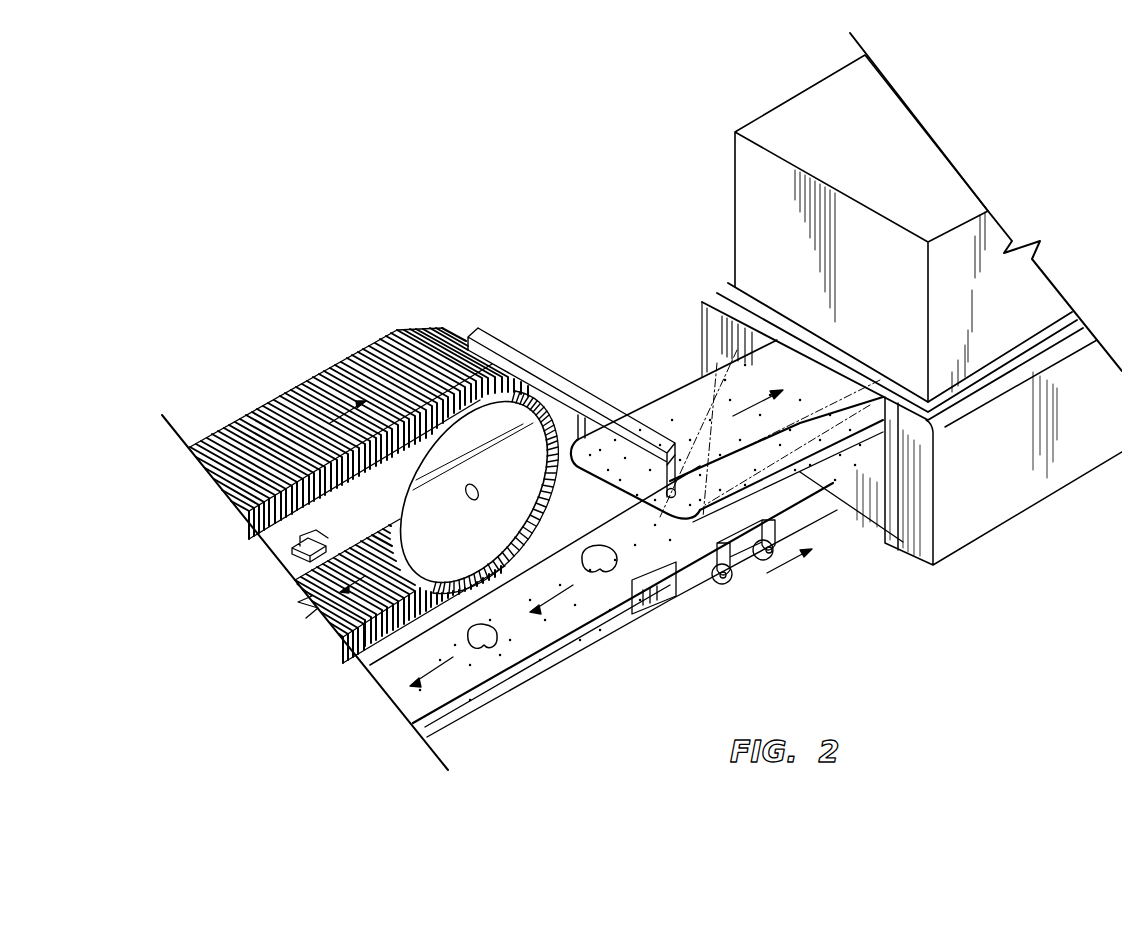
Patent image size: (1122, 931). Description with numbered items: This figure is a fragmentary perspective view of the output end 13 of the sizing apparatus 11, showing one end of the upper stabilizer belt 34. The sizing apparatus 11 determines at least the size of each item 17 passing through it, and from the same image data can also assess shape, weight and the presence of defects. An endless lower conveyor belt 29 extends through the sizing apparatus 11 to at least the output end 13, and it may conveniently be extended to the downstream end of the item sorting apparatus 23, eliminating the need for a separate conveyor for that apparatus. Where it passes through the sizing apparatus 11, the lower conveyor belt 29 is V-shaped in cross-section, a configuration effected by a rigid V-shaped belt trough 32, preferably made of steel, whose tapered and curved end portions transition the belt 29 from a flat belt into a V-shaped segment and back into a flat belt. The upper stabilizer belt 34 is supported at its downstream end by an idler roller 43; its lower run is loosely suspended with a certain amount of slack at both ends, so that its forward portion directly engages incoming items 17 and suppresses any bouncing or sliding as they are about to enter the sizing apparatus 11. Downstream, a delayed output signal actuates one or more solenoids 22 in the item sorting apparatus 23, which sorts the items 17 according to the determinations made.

The sizing apparatus 11 is at (738, 96).
The output end 13 is at (633, 386).
The item 17 is at (493, 648).
The solenoid 22 is at (290, 545).
The item sorting apparatus 23 is at (338, 328).
The lower conveyor belt 29 is at (440, 685).
The belt trough 32 is at (837, 468).
The upper stabilizer belt 34 is at (680, 393).
The idler roller 43 is at (660, 496).